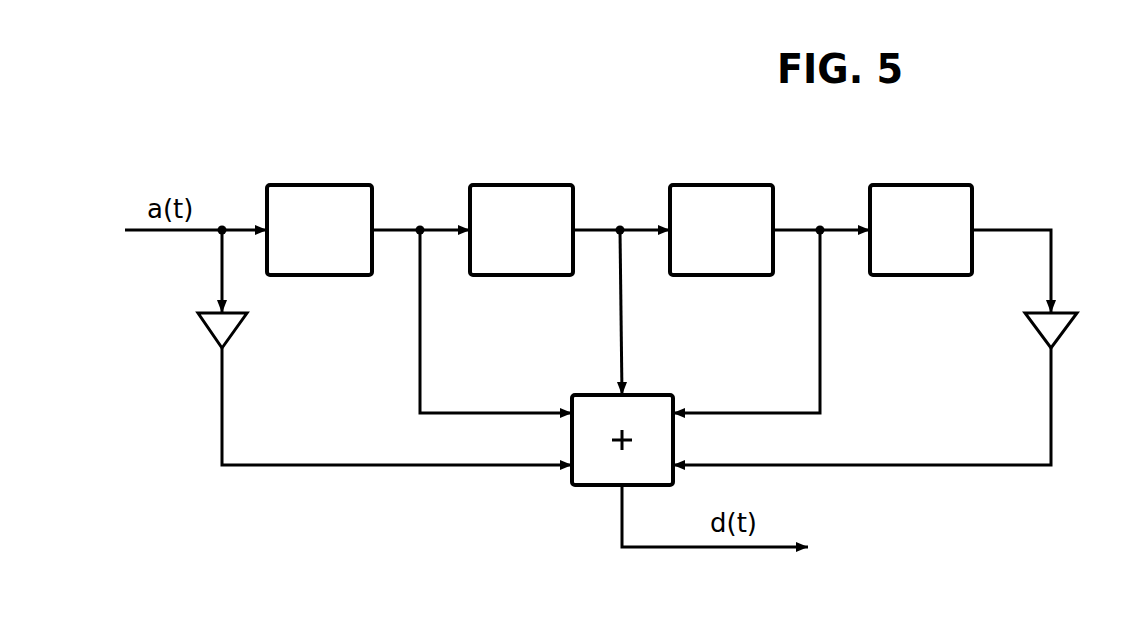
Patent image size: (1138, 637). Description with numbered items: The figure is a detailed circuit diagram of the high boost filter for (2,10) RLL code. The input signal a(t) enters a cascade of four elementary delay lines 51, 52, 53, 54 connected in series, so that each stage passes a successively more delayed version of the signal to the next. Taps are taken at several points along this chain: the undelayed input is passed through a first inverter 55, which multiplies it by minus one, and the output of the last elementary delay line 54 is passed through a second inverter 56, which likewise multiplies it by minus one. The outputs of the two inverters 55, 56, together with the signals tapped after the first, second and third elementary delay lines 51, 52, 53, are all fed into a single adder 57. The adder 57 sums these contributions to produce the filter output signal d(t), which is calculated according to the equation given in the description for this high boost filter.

The elementary delay line 51 is at (302, 185).
The elementary delay line 52 is at (505, 185).
The elementary delay line 53 is at (705, 185).
The elementary delay line 54 is at (905, 185).
The inverter 55 is at (236, 330).
The inverter 56 is at (1064, 330).
The adder 57 is at (643, 395).